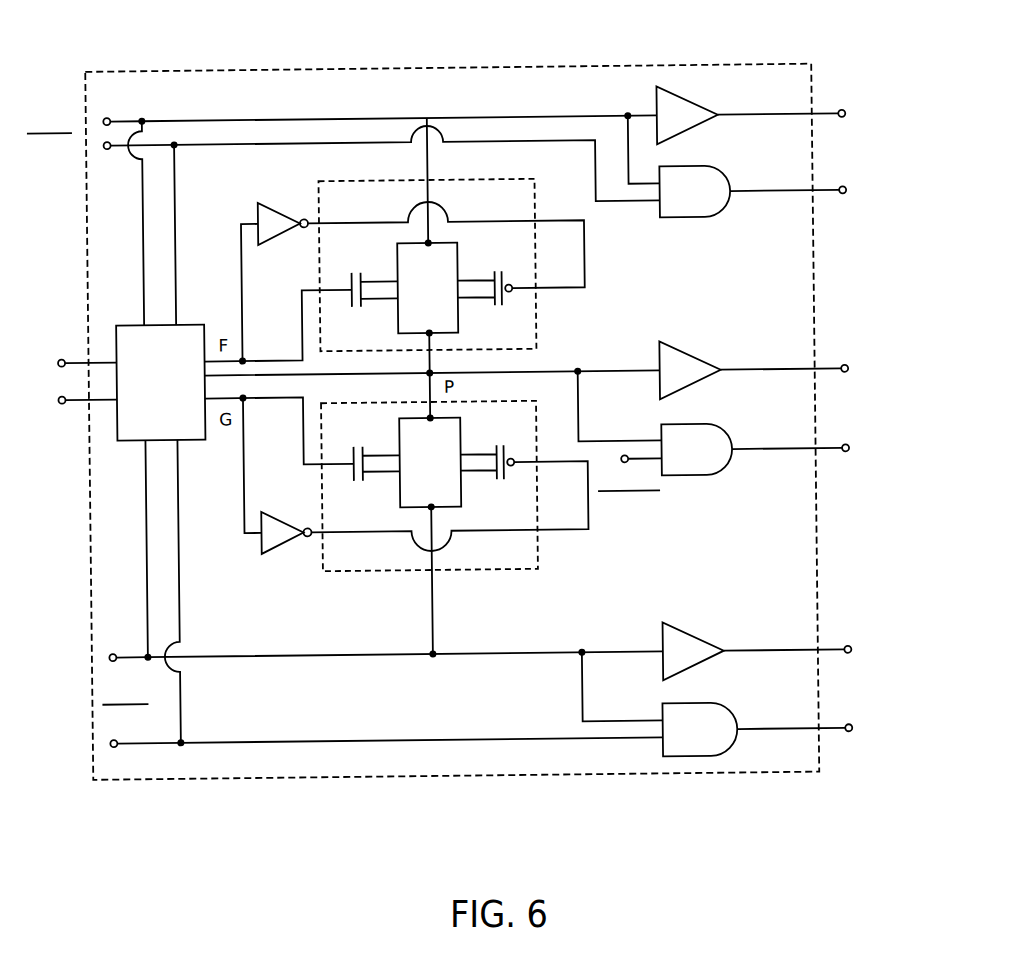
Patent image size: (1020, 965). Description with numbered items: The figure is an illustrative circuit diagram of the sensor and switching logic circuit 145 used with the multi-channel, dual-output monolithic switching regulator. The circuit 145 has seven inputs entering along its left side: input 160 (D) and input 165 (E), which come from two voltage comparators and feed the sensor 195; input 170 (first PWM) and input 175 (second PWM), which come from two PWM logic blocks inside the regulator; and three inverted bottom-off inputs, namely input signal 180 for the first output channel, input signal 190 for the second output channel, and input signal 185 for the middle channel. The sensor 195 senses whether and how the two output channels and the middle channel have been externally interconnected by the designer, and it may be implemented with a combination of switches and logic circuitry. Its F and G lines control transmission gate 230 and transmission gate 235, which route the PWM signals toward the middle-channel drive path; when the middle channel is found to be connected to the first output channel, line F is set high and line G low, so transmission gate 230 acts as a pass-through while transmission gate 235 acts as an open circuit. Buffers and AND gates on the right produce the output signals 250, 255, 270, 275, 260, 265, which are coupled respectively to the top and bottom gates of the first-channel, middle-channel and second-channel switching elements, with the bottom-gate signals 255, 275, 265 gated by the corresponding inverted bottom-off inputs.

The sensor and switching logic circuit 145 is at (259, 67).
The input PWM1 170 is at (148, 116).
The input signal BOFF1 180 is at (120, 146).
The sensor 195 is at (128, 321).
The input D 160 is at (67, 356).
The input E 165 is at (71, 401).
The input PWM2 175 is at (141, 653).
The input signal BOFF2 190 is at (160, 743).
The transmission gate 230 is at (320, 188).
The transmission gate 235 is at (355, 573).
The input signal BOFFMC 185 is at (647, 464).
The signal TG1 250 is at (832, 116).
The signal BG1 255 is at (832, 193).
The signal TGMC 270 is at (829, 374).
The signal BGMC 275 is at (830, 450).
The signal TG2 260 is at (827, 654).
The signal BG2 265 is at (826, 731).